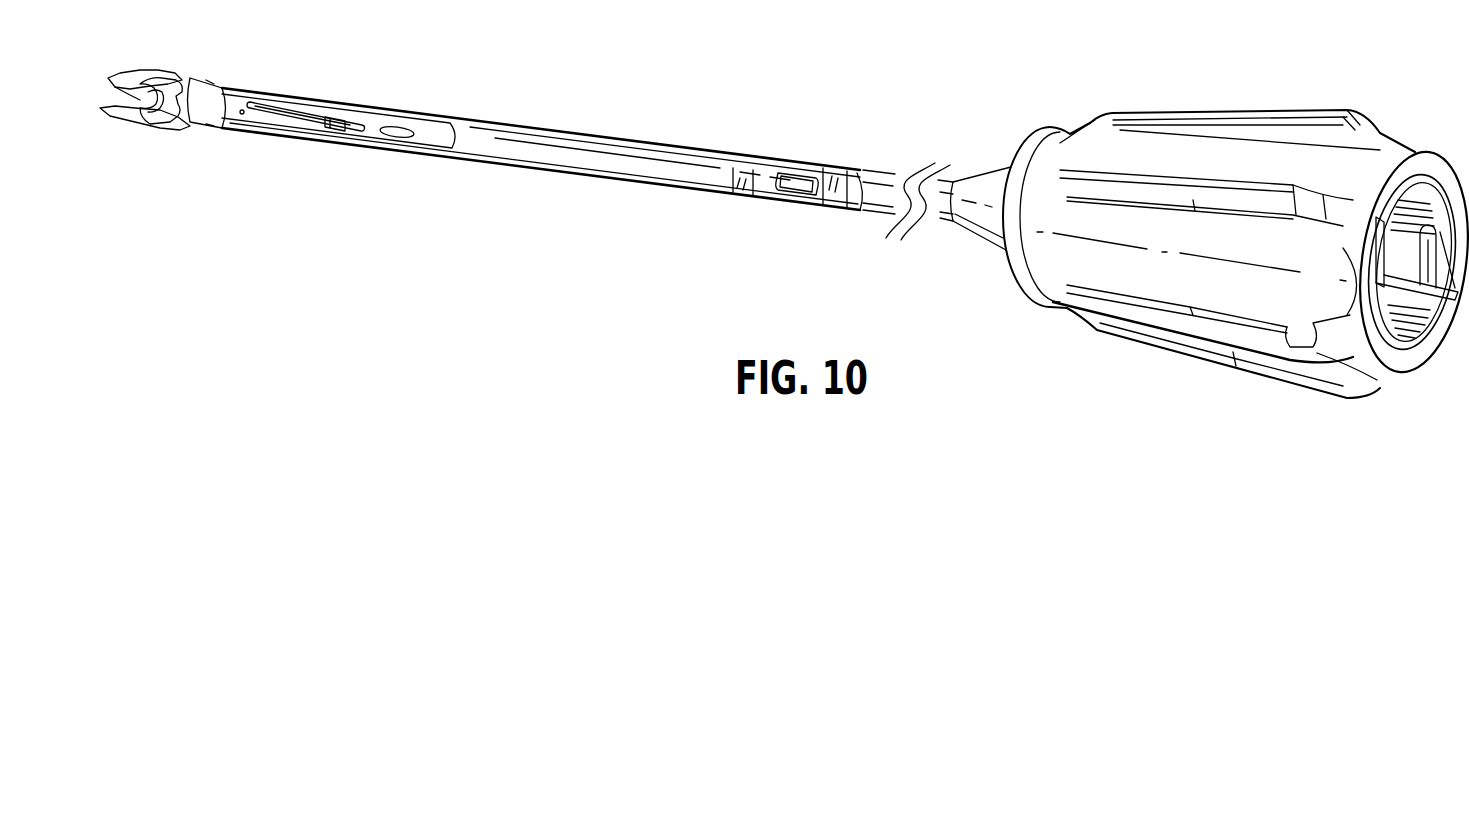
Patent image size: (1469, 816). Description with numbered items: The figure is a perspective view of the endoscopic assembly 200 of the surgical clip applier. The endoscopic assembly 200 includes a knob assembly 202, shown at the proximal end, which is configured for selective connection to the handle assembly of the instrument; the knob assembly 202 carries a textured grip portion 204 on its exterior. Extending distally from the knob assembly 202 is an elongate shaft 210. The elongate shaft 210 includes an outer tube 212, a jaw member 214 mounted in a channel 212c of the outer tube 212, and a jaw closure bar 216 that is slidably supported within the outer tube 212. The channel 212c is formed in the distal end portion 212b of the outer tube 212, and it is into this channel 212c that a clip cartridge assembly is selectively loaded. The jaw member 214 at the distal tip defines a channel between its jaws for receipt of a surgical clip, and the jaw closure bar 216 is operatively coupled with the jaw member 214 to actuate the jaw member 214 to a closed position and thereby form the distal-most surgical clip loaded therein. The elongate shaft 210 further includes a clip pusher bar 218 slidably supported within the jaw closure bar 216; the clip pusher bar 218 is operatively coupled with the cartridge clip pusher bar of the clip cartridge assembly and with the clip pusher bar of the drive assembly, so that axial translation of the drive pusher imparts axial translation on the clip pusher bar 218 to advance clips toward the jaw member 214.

The endoscopic assembly 200 is at (1012, 92).
The knob assembly 202 is at (1305, 103).
The grip portion 204 is at (1200, 113).
The elongate shaft 210 is at (887, 162).
The outer tube 212 is at (935, 223).
The distal end portion 212b is at (555, 128).
The channel 212c is at (652, 163).
The jaw member 214 is at (375, 118).
The jaw closure bar 216 is at (866, 213).
The clip pusher bar 218 is at (759, 170).